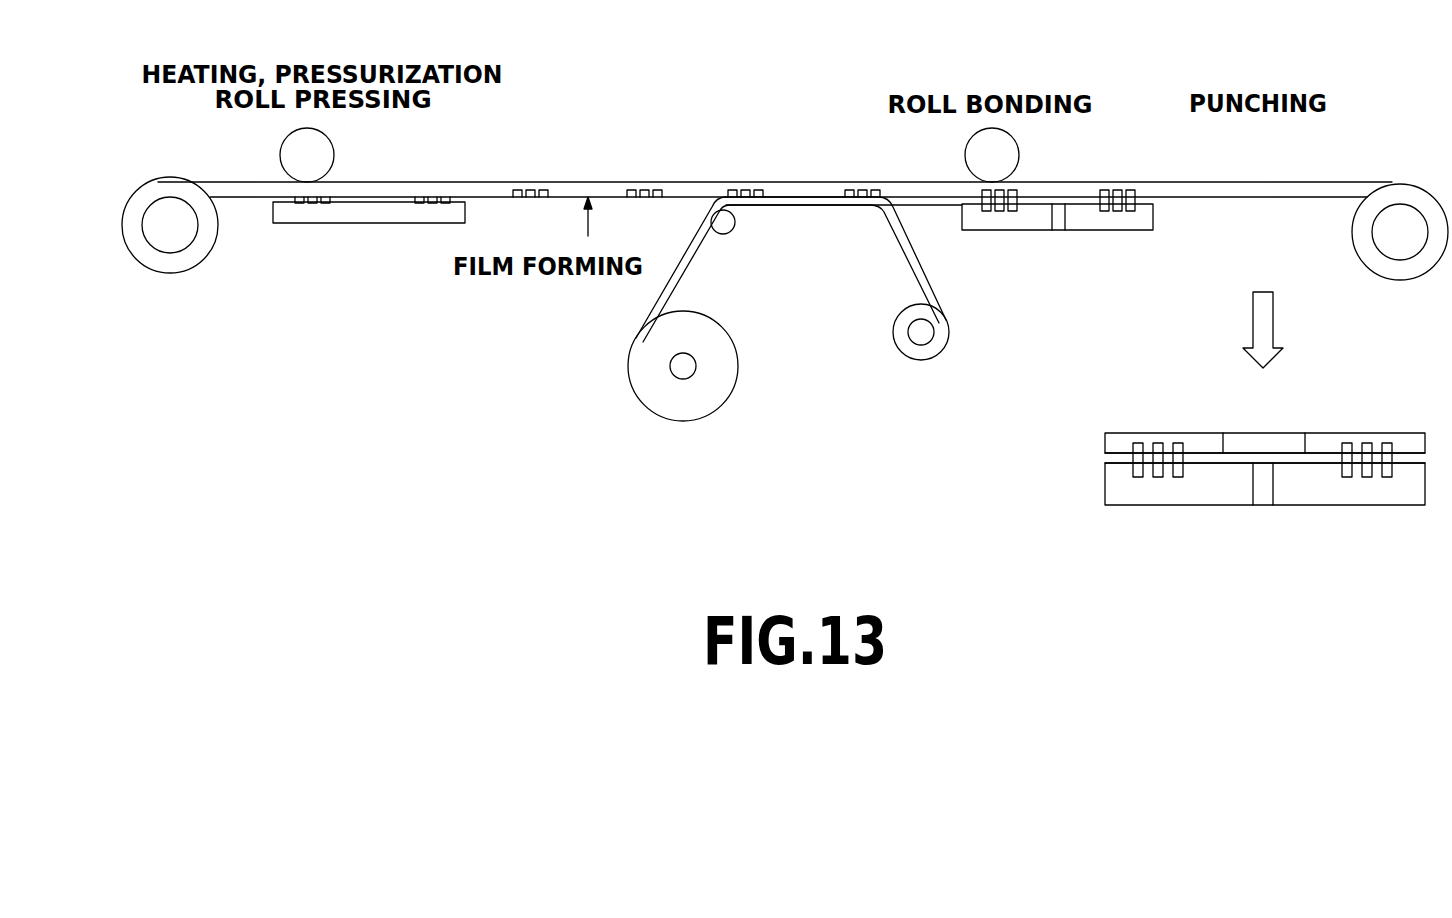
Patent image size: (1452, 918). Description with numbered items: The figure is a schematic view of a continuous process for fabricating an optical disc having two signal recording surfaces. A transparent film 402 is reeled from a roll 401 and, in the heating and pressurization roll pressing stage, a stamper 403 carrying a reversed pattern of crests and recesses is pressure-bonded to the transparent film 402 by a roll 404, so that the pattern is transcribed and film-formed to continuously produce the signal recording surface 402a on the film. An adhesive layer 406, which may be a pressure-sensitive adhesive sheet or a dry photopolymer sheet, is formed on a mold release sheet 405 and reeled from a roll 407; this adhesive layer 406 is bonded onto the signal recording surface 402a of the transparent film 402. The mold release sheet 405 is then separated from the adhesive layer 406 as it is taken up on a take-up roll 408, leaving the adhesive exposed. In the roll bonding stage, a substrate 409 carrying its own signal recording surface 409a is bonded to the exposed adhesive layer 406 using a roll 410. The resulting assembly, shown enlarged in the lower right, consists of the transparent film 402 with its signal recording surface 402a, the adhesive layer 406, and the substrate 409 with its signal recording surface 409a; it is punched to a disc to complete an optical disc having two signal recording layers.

The roll 401 is at (174, 272).
The transparent film 402 is at (242, 183).
The signal recording surface 402a is at (622, 195).
The stamper 403 is at (385, 218).
The roll 404 is at (330, 153).
The mold release sheet 405 is at (683, 272).
The adhesive layer 406 is at (653, 313).
The roll 407 is at (687, 415).
The take-up roll 408 is at (925, 355).
The substrate 409 is at (1098, 227).
The signal recording surface 409a is at (1138, 205).
The roll 410 is at (973, 152).